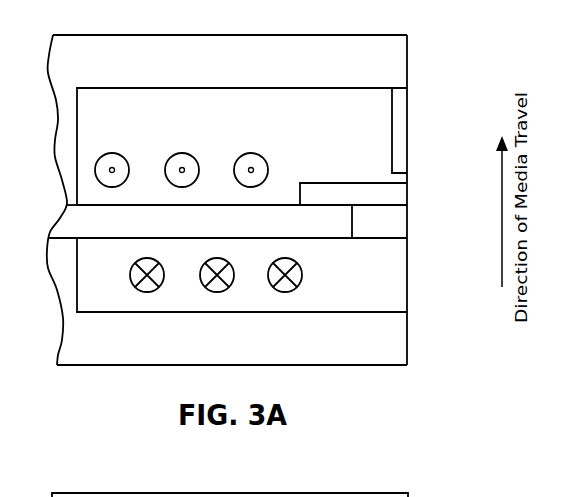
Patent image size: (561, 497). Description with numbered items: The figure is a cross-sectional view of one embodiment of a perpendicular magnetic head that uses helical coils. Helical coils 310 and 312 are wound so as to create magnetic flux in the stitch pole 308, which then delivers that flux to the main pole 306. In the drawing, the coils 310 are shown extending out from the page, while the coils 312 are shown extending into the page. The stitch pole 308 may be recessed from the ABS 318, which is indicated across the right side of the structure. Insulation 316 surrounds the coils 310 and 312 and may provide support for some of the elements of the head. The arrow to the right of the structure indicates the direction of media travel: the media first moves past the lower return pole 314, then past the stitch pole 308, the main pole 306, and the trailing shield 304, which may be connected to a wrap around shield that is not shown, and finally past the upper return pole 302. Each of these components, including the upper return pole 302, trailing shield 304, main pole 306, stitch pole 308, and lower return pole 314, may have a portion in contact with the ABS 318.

The upper return pole 302 is at (315, 73).
The trailing shield 304 is at (408, 137).
The main pole 306 is at (408, 190).
The stitch pole 308 is at (260, 231).
The helical coils 310 is at (108, 155).
The helical coils 312 is at (129, 277).
The lower return pole 314 is at (260, 351).
The insulation 316 is at (353, 145).
The ABS 318 is at (417, 53).